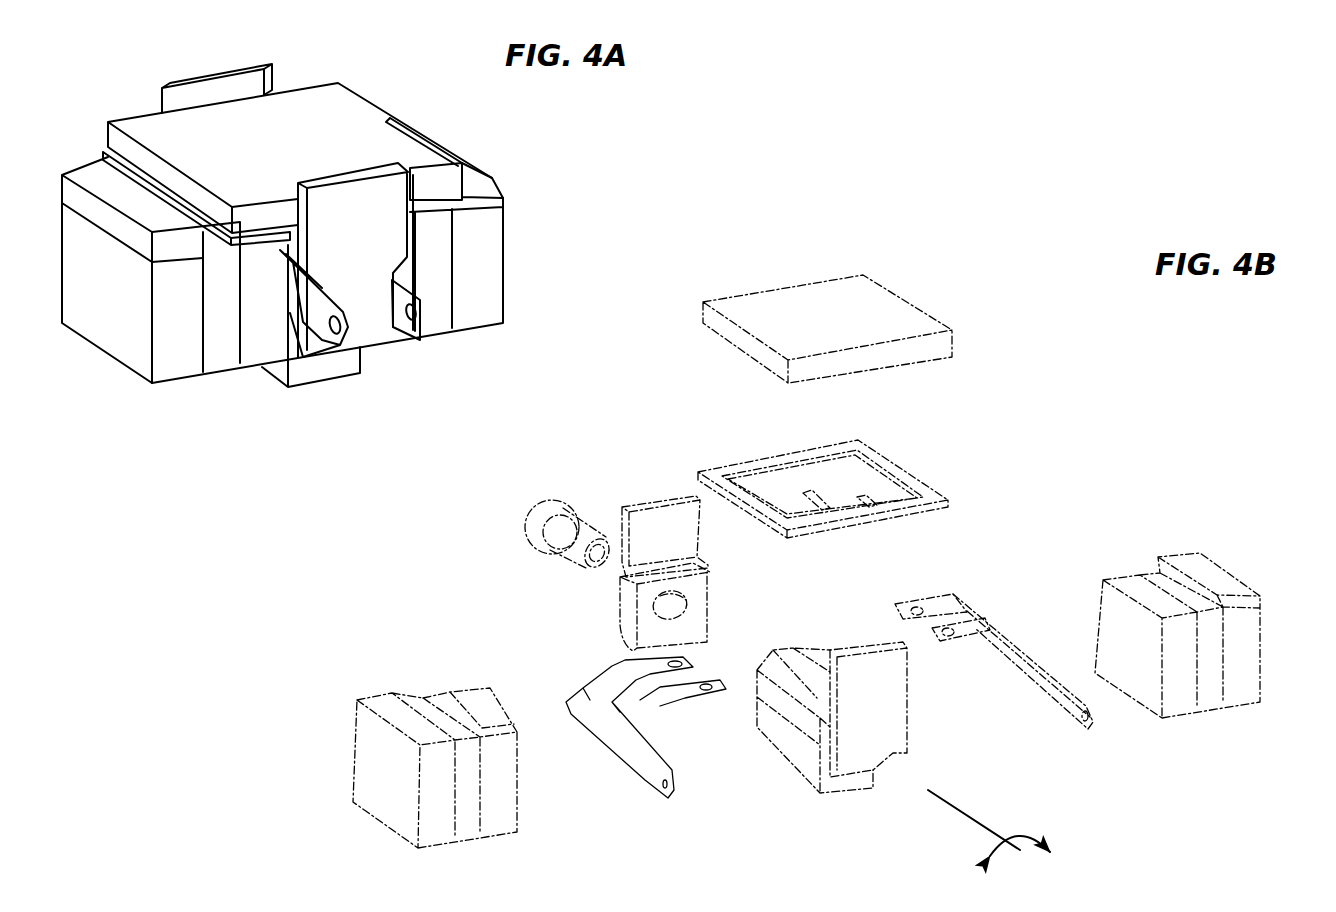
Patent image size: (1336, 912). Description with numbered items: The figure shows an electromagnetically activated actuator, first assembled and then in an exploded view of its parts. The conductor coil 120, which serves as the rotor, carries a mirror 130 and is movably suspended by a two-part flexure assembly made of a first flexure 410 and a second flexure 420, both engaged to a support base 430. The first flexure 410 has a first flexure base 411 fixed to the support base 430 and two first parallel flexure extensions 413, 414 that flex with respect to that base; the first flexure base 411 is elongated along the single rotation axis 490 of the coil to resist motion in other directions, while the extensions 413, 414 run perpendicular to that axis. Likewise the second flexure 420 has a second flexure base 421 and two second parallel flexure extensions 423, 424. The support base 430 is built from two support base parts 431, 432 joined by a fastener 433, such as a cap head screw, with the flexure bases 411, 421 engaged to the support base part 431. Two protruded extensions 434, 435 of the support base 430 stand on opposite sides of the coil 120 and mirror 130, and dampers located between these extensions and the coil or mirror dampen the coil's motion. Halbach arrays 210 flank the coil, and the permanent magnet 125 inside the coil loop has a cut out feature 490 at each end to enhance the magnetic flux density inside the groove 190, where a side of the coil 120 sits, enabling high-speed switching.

In FIG. 4A, the conductor coil 120 is at (108, 157).
In FIG. 4B, the conductor coil 120 is at (917, 470).
In FIG. 4B, the permanent magnet 125 is at (1130, 590).
In FIG. 4A, the mirror 130 is at (292, 148).
In FIG. 4B, the mirror 130 is at (897, 293).
In FIG. 4B, the groove 190 is at (1170, 592).
In FIG. 4A, the Halbach array 210 is at (480, 272).
In FIG. 4B, the Halbach array 210 is at (1120, 576).
In FIG. 4A, the first flexure 410 is at (313, 313).
In FIG. 4B, the first flexure 410 is at (611, 709).
In FIG. 4B, the first flexure base 411 is at (612, 748).
In FIG. 4B, the first parallel flexure extension 413 is at (690, 664).
In FIG. 4B, the first parallel flexure extension 414 is at (677, 698).
In FIG. 4A, the second flexure 420 is at (418, 302).
In FIG. 4B, the second flexure 420 is at (982, 679).
In FIG. 4B, the second flexure base 421 is at (1040, 682).
In FIG. 4B, the second parallel flexure extension 423 is at (945, 605).
In FIG. 4B, the second parallel flexure extension 424 is at (963, 630).
In FIG. 4A, the support base 430 is at (332, 365).
In FIG. 4B, the support base part 431 is at (800, 759).
In FIG. 4B, the support base part 432 is at (608, 618).
In FIG. 4B, the fastener 433 is at (523, 527).
In FIG. 4A, the protruded extension 434 is at (375, 221).
In FIG. 4B, the protruded extension 434 is at (860, 683).
In FIG. 4A, the protruded extension 435 is at (222, 73).
In FIG. 4B, the protruded extension 435 is at (668, 515).
In FIG. 4B, the single rotation axis / cut out feature 490 is at (935, 790).